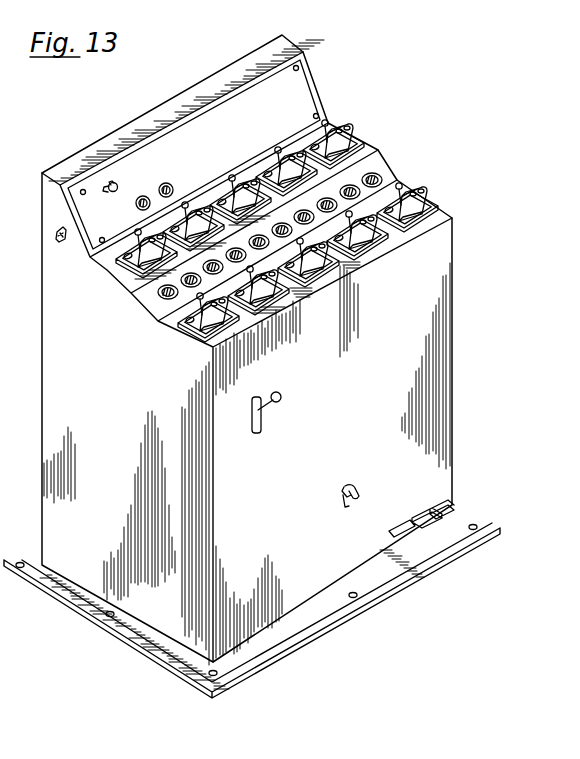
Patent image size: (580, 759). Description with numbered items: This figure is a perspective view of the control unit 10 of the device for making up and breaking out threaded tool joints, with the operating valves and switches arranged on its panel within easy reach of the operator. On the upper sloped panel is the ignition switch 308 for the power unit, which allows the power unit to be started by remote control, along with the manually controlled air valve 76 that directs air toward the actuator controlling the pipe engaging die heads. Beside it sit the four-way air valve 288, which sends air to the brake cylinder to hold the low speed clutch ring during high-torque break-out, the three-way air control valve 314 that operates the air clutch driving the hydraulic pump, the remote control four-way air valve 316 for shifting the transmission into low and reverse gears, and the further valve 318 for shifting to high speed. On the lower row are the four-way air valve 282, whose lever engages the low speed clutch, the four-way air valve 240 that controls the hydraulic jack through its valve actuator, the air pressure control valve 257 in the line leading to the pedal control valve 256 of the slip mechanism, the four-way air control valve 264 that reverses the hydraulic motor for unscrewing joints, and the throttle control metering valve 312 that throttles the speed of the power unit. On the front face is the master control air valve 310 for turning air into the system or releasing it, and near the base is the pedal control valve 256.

The control unit 10 is at (457, 310).
The manually controlled air valve 76 is at (133, 268).
The four-way air valve 288 is at (205, 207).
The three-way air control valve 314 is at (247, 187).
The remote control four-way air valve 316 is at (295, 160).
The valve 318 is at (347, 142).
The ignition switch 308 is at (117, 183).
The throttle control metering valve 312 is at (418, 200).
The four-way air control valve 264 is at (377, 232).
The air pressure control valve 257 is at (310, 260).
The four-way air valve 240 is at (267, 297).
The four-way air valve 282 is at (222, 323).
The master control air valve 310 is at (281, 399).
The pedal control valve 256 is at (413, 513).